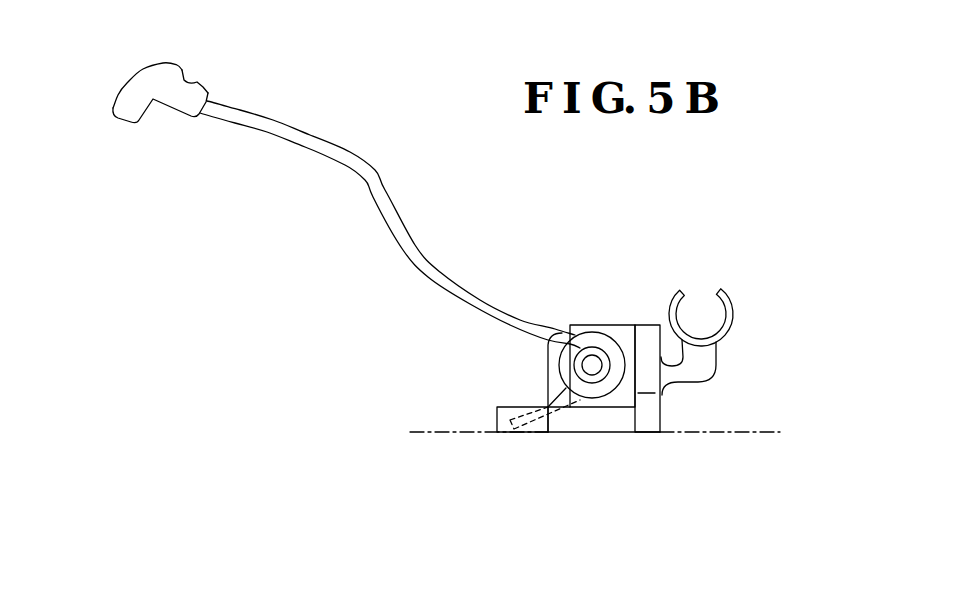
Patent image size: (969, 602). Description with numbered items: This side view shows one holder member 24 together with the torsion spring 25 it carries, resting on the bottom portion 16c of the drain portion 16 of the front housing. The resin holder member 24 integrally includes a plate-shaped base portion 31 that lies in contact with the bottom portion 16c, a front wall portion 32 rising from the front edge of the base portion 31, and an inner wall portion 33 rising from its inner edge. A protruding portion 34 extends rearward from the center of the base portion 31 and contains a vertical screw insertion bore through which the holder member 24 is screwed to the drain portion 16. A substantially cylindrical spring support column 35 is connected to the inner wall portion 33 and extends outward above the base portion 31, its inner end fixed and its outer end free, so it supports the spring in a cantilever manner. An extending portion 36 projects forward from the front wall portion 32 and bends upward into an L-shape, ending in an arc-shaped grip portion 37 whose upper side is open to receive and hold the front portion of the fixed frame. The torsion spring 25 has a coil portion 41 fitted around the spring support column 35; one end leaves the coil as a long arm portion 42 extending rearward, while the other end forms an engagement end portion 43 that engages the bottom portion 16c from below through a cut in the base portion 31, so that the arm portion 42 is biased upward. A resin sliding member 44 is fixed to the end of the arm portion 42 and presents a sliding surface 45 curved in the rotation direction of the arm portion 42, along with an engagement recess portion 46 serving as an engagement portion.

The drain portion 16 is at (637, 419).
The bottom portion 16c is at (727, 431).
The holder member 24 is at (650, 432).
The torsion spring 25 is at (493, 287).
The base portion 31 is at (596, 425).
The front wall portion 32 is at (645, 330).
The inner wall portion 33 is at (602, 325).
The protruding portion 34 is at (497, 409).
The spring support column 35 is at (574, 341).
The extending portion 36 is at (710, 358).
The grip portion 37 is at (734, 311).
The coil portion 41 is at (560, 366).
The arm portion 42 is at (387, 205).
The engagement end portion 43 is at (538, 433).
The sliding member 44 is at (113, 108).
The sliding surface 45 is at (140, 72).
The engagement recess portion 46 is at (192, 82).